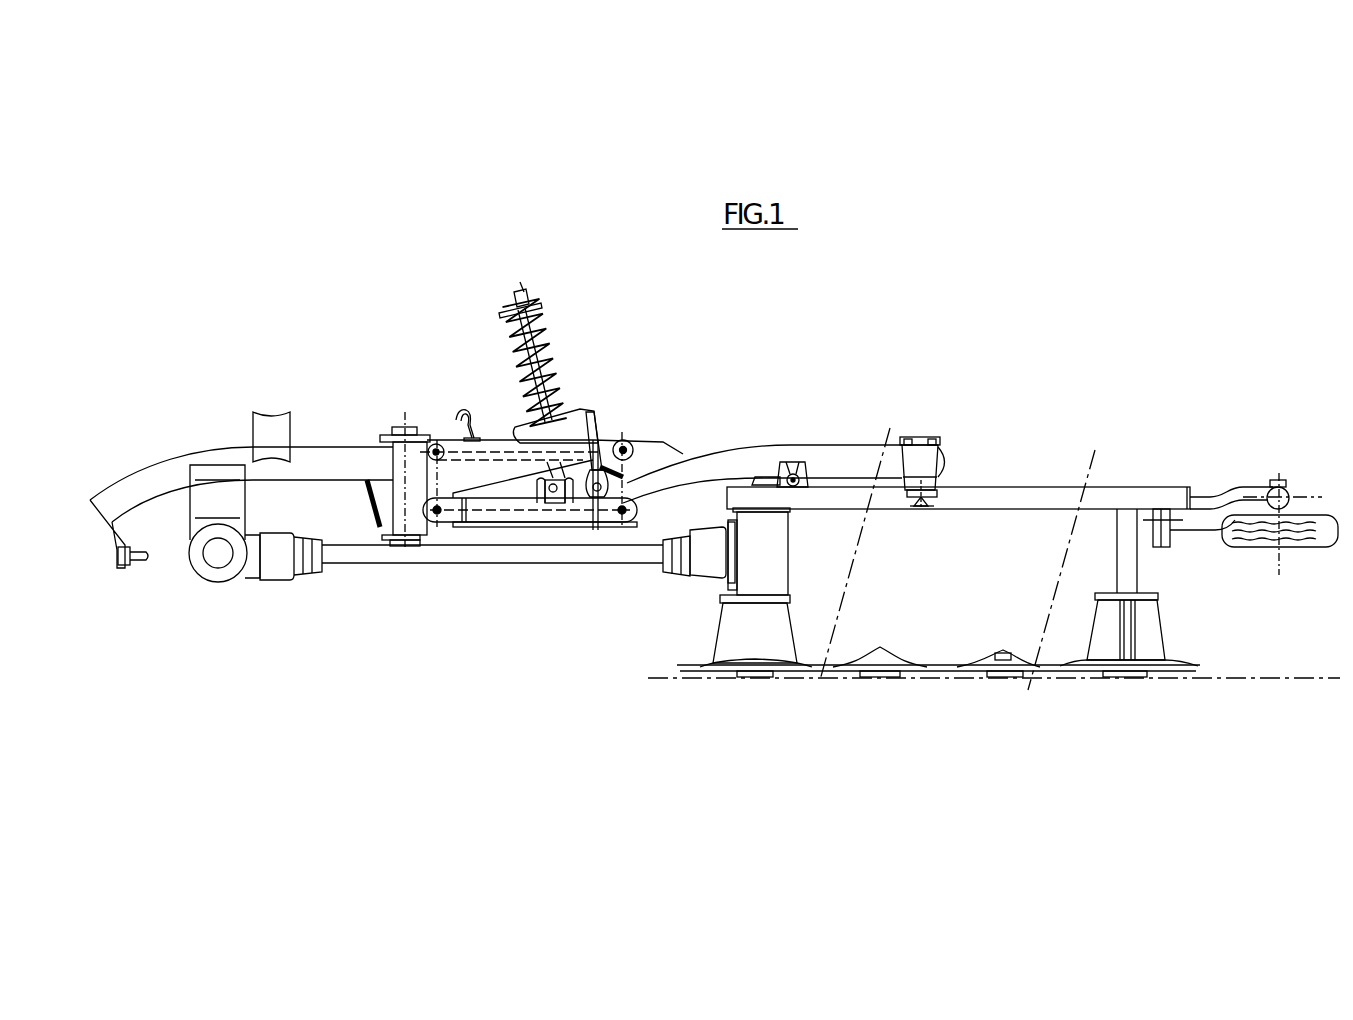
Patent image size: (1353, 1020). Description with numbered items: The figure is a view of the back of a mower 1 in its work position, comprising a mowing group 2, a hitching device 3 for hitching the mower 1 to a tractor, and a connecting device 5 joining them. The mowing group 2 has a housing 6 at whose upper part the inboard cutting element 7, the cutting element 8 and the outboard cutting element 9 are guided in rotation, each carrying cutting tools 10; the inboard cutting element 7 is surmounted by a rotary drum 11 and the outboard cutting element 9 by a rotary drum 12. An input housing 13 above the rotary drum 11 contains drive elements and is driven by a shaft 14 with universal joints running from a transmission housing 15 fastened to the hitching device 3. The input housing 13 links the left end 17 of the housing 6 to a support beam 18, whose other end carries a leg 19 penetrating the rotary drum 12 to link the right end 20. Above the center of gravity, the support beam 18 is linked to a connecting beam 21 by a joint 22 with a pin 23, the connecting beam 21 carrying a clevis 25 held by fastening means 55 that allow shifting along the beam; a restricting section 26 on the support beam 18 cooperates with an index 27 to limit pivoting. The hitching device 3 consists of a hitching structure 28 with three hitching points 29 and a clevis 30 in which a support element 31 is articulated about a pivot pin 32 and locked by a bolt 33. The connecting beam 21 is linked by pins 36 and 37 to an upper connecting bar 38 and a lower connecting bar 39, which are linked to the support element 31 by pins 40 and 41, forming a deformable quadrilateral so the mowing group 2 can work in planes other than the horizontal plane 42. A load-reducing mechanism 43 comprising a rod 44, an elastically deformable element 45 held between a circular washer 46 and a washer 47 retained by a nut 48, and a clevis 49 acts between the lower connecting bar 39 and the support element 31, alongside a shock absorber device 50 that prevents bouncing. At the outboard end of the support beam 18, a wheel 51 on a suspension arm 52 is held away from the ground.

The mower 1 is at (318, 312).
The mowing group 2 is at (839, 730).
The hitching device 3 is at (150, 452).
The connecting device 5 is at (678, 438).
The housing 6 is at (945, 672).
The inboard cutting element 7 is at (723, 657).
The cutting element 8 is at (977, 657).
The outboard cutting element 9 is at (1160, 658).
The cutting tools 10 is at (822, 667).
The rotary drum 11 is at (778, 633).
The rotary drum 12 is at (1153, 620).
The input housing 13 is at (777, 541).
The shaft with universal joints 14 is at (342, 561).
The transmission housing 15 is at (210, 574).
The left end 17 is at (655, 692).
The support beam 18 is at (1152, 495).
The leg 19 is at (1120, 563).
The right end 20 is at (1200, 695).
The connecting beam 21 is at (873, 452).
The joint 22 is at (919, 498).
The pin 23 is at (930, 504).
The clevis 25 is at (925, 455).
The restricting section 26 is at (783, 471).
The index 27 is at (810, 472).
The hitching structure 28 is at (189, 461).
The hitching points 29 is at (280, 416).
The clevis 30 is at (380, 498).
The support element 31 is at (416, 488).
The pivot pin 32 is at (403, 428).
The bolt 33 is at (459, 412).
The pin 36 is at (626, 447).
The pin 37 is at (627, 518).
The upper connecting bar 38 is at (477, 461).
The lower connecting bar 39 is at (533, 514).
The pin 40 is at (435, 443).
The pin 41 is at (443, 517).
The horizontal plane 42 is at (1280, 679).
The load-reducing mechanism 43 is at (555, 308).
The rod 44 is at (550, 353).
The elastically deformable element 45 is at (550, 374).
The circular washer 46 is at (503, 427).
The washer 47 is at (503, 317).
The nut 48 is at (532, 310).
The clevis 49 is at (554, 493).
The shock absorber device 50 is at (632, 466).
The wheel 51 is at (1308, 540).
The suspension arm 52 is at (1243, 486).
The fastening means 55 is at (932, 437).